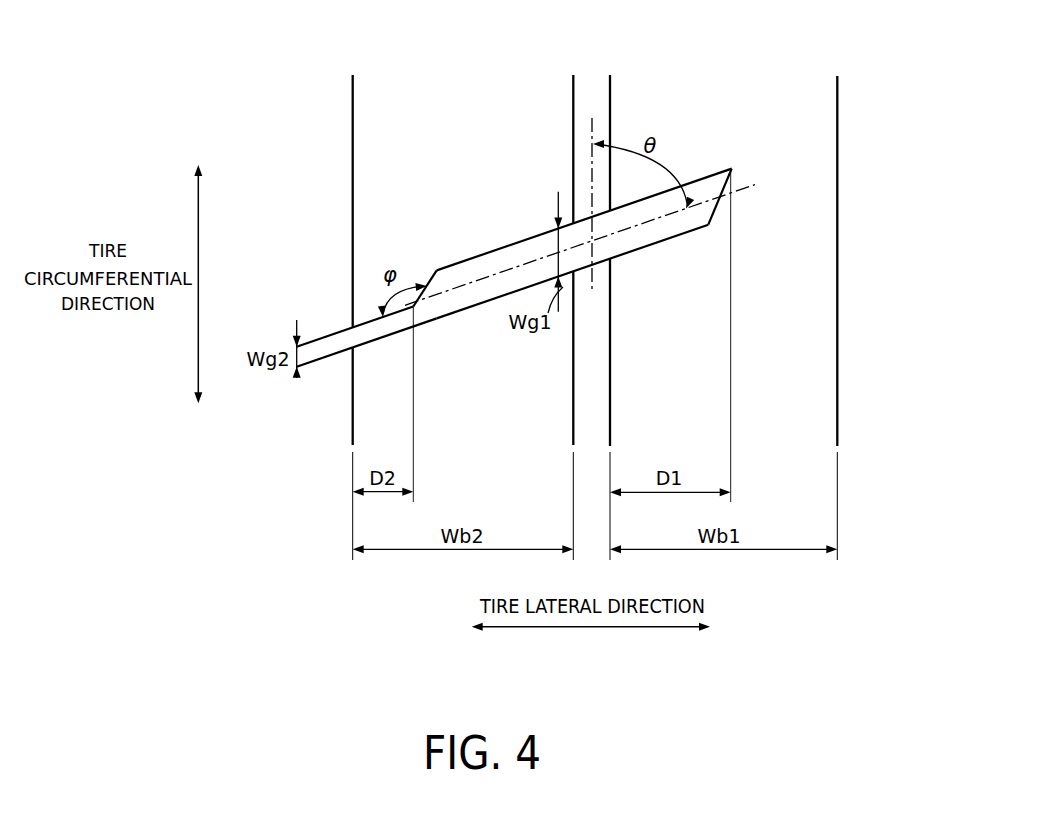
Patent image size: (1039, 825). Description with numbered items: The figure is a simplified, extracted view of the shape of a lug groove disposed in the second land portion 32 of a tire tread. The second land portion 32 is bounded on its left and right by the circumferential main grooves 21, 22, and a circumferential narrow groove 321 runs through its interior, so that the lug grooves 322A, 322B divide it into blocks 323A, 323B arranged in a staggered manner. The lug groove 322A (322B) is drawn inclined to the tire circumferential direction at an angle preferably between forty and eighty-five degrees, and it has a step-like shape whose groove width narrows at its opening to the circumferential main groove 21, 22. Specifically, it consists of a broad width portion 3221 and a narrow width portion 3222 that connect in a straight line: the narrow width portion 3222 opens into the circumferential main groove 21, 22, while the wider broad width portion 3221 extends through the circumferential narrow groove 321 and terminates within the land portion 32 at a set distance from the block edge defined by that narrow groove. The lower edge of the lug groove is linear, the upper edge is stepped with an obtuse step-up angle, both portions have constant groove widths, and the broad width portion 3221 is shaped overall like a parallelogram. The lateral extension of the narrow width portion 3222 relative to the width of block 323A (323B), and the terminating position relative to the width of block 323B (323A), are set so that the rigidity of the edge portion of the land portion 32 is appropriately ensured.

The second land portion 32 is at (513, 192).
The circumferential narrow groove 321 is at (593, 90).
The first lug groove 322A is at (577, 241).
The second lug groove 322B is at (580, 244).
The broad width portion 3221 is at (512, 244).
The narrow width portion 3222 is at (367, 322).
The circumferential main groove 22 is at (296, 297).
The circumferential main groove 21 is at (889, 297).
The block 323A is at (342, 157).
The block 323B is at (848, 358).